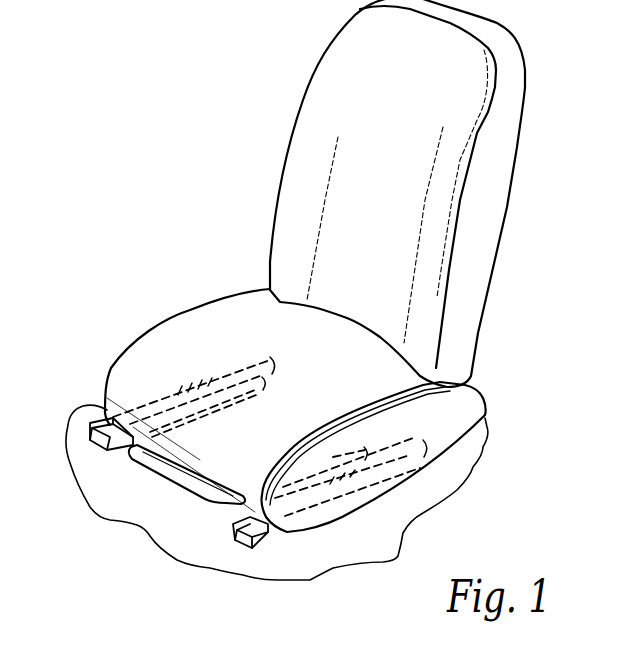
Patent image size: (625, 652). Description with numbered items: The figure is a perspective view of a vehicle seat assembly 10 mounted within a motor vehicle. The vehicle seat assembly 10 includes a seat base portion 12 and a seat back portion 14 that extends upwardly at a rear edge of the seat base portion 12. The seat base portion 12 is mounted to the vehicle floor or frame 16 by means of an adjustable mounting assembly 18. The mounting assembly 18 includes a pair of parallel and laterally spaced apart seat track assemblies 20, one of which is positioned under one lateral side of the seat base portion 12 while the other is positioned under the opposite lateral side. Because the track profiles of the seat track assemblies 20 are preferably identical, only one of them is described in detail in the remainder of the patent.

The vehicle seat assembly 10 is at (208, 101).
The seat base portion 12 is at (107, 375).
The seat back portion 14 is at (500, 248).
The vehicle floor or frame 16 is at (463, 460).
The adjustable mounting assembly 18 is at (143, 463).
The seat track assemblies 20 is at (92, 440).